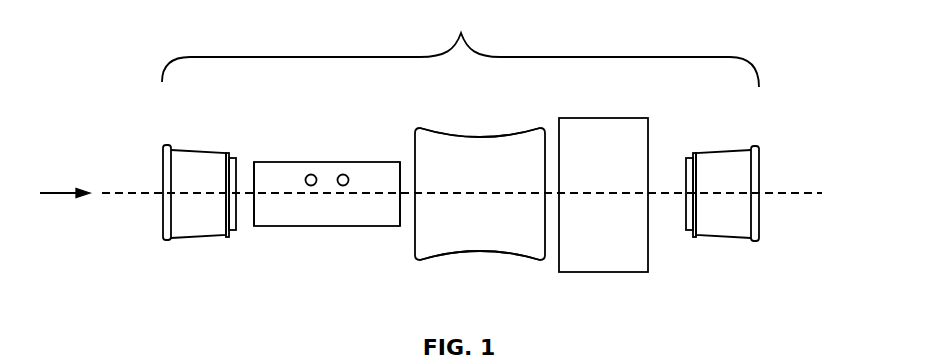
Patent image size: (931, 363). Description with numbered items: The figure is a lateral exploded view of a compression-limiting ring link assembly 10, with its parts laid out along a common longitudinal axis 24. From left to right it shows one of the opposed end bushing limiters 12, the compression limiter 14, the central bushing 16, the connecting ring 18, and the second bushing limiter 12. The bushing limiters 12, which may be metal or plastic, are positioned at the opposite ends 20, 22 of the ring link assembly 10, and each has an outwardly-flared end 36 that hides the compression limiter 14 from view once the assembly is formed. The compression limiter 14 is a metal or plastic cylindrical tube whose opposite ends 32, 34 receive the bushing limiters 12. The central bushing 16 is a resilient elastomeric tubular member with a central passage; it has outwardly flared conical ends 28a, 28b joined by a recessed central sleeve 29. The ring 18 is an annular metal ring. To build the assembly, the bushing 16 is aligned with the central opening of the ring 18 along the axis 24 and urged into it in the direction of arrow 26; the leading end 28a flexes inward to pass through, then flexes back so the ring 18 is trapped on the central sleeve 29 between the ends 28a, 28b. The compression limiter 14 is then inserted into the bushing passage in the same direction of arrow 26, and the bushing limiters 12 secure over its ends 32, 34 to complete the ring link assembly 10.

The compression-limiting ring link assembly 10 is at (460, 46).
The end bushing limiter 12 is at (470, 196).
The compression limiter 14 is at (345, 152).
The central bushing 16 is at (487, 125).
The connecting ring 18 is at (600, 108).
The end 20 is at (184, 150).
The end 22 is at (741, 150).
The longitudinal axis 24 is at (105, 194).
The arrow 26 is at (60, 194).
The leading end 28a is at (532, 128).
The end 28b is at (433, 128).
The central sleeve 29 is at (480, 253).
The end 32 is at (268, 162).
The end 34 is at (392, 226).
The outwardly-flared end 36 is at (163, 152).